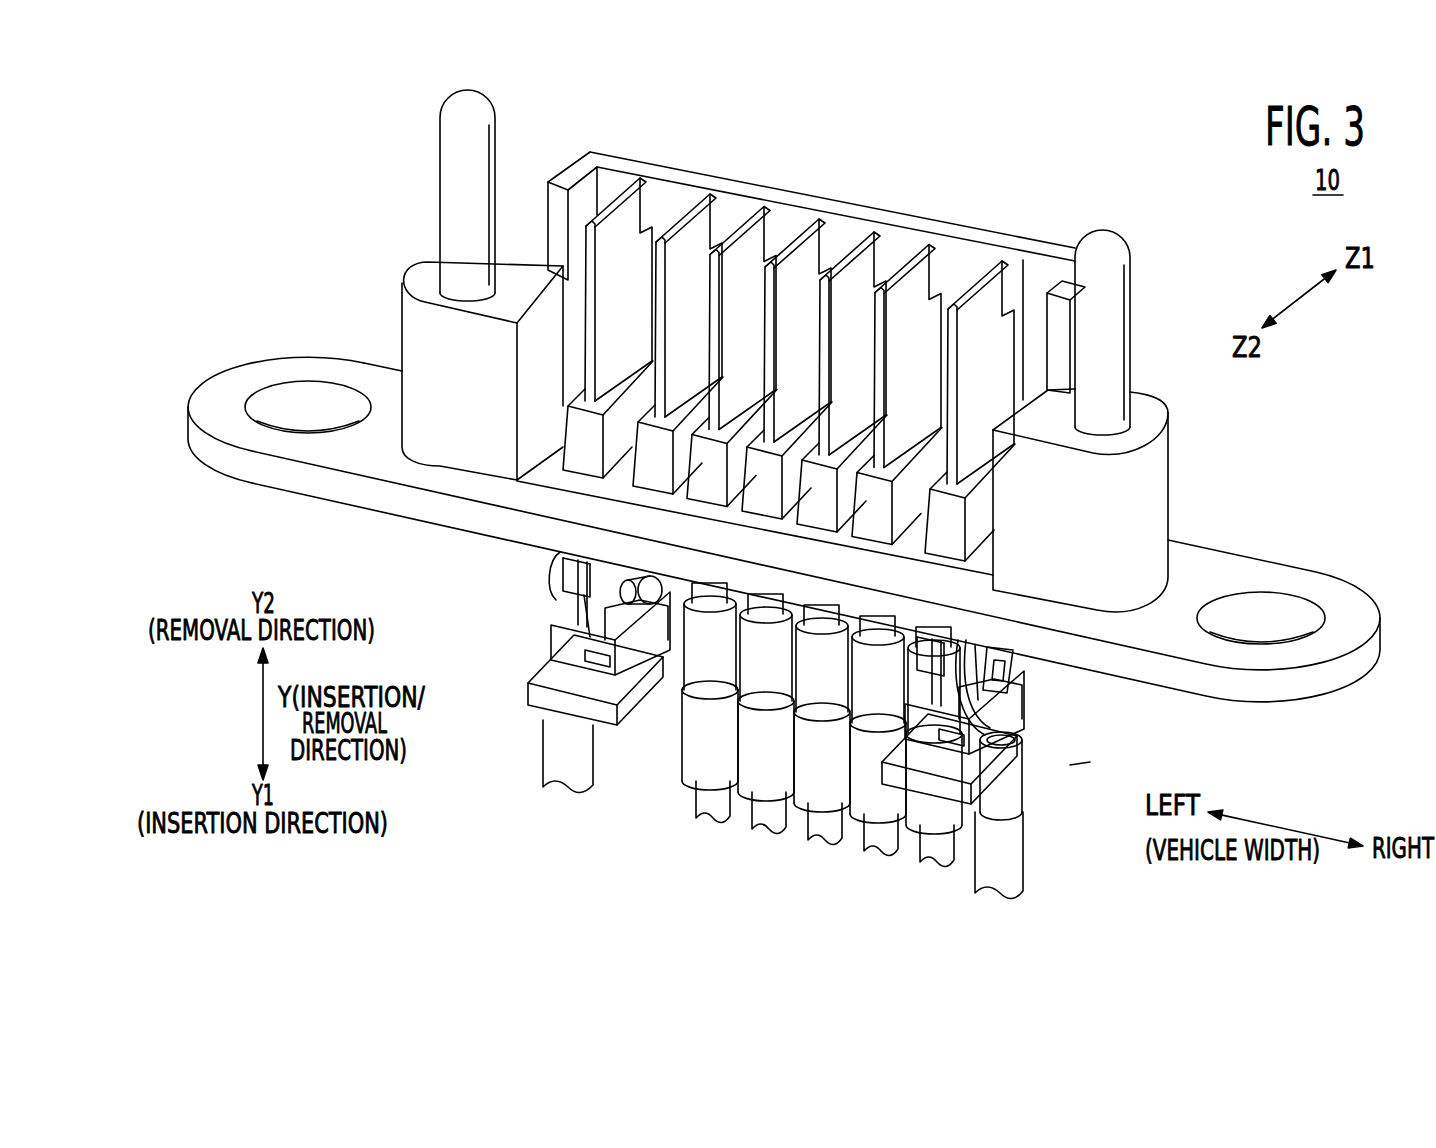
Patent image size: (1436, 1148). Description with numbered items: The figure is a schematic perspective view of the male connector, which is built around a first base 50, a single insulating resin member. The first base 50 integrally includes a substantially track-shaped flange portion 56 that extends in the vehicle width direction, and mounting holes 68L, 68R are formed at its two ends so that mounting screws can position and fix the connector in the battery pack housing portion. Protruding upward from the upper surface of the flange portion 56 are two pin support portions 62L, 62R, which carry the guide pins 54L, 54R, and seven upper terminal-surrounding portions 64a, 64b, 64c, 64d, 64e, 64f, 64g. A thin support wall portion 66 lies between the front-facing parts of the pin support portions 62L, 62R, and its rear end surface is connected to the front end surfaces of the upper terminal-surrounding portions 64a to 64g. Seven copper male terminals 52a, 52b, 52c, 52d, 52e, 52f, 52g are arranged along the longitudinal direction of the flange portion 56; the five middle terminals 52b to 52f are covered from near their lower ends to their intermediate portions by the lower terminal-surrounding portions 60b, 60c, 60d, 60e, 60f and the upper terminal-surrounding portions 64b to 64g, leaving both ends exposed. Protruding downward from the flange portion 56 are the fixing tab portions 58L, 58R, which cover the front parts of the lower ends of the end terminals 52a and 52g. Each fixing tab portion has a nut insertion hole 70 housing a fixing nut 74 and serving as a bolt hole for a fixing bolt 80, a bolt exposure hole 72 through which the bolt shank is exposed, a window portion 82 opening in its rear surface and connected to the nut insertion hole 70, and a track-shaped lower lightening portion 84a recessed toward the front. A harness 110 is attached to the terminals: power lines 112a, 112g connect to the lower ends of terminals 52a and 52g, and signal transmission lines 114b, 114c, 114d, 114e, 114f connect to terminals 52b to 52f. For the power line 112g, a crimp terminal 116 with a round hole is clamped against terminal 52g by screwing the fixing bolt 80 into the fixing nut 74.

The first base 50 is at (1249, 551).
The male terminal 52a is at (621, 215).
The male terminal 52b is at (692, 235).
The male terminal 52c is at (749, 248).
The male terminal 52d is at (804, 262).
The male terminal 52e is at (860, 275).
The male terminal 52f is at (915, 290).
The male terminal 52g is at (983, 300).
The guide pin 54L is at (458, 152).
The guide pin 54R is at (1112, 295).
The flange portion 56 is at (253, 375).
The fixing tab portion 58L is at (535, 702).
The fixing tab portion 58R is at (992, 777).
The lower terminal-surrounding portion 60b is at (695, 586).
The lower terminal-surrounding portion 60c is at (751, 597).
The lower terminal-surrounding portion 60d is at (807, 608).
The lower terminal-surrounding portion 60e is at (863, 619).
The lower terminal-surrounding portion 60f is at (919, 630).
The pin support portion 62L is at (418, 281).
The pin support portion 62R is at (1152, 463).
The upper terminal-surrounding portion 64a is at (628, 405).
The upper terminal-surrounding portion 64b is at (696, 421).
The upper terminal-surrounding portion 64c is at (750, 434).
The upper terminal-surrounding portion 64d is at (805, 446).
The upper terminal-surrounding portion 64e is at (860, 459).
The upper terminal-surrounding portion 64f is at (918, 472).
The upper terminal-surrounding portion 64g is at (985, 488).
The support wall portion 66 is at (1045, 280).
The mounting hole 68L is at (310, 397).
The mounting hole 68R is at (1283, 612).
The nut insertion hole 70 is at (560, 615).
The bolt exposure hole 72 is at (636, 612).
The fixing nut 74 is at (563, 576).
The fixing bolt 80 is at (548, 603).
The window portion 82 is at (590, 640).
The lower lightening portion 84a is at (600, 668).
The harness 110 is at (1090, 762).
The power line 112a is at (583, 795).
The power line 112g is at (1010, 857).
The signal transmission line 114b is at (713, 812).
The signal transmission line 114c is at (769, 823).
The signal transmission line 114d is at (825, 835).
The signal transmission line 114e is at (881, 846).
The signal transmission line 114f is at (937, 858).
The crimp terminal 116 is at (1023, 790).